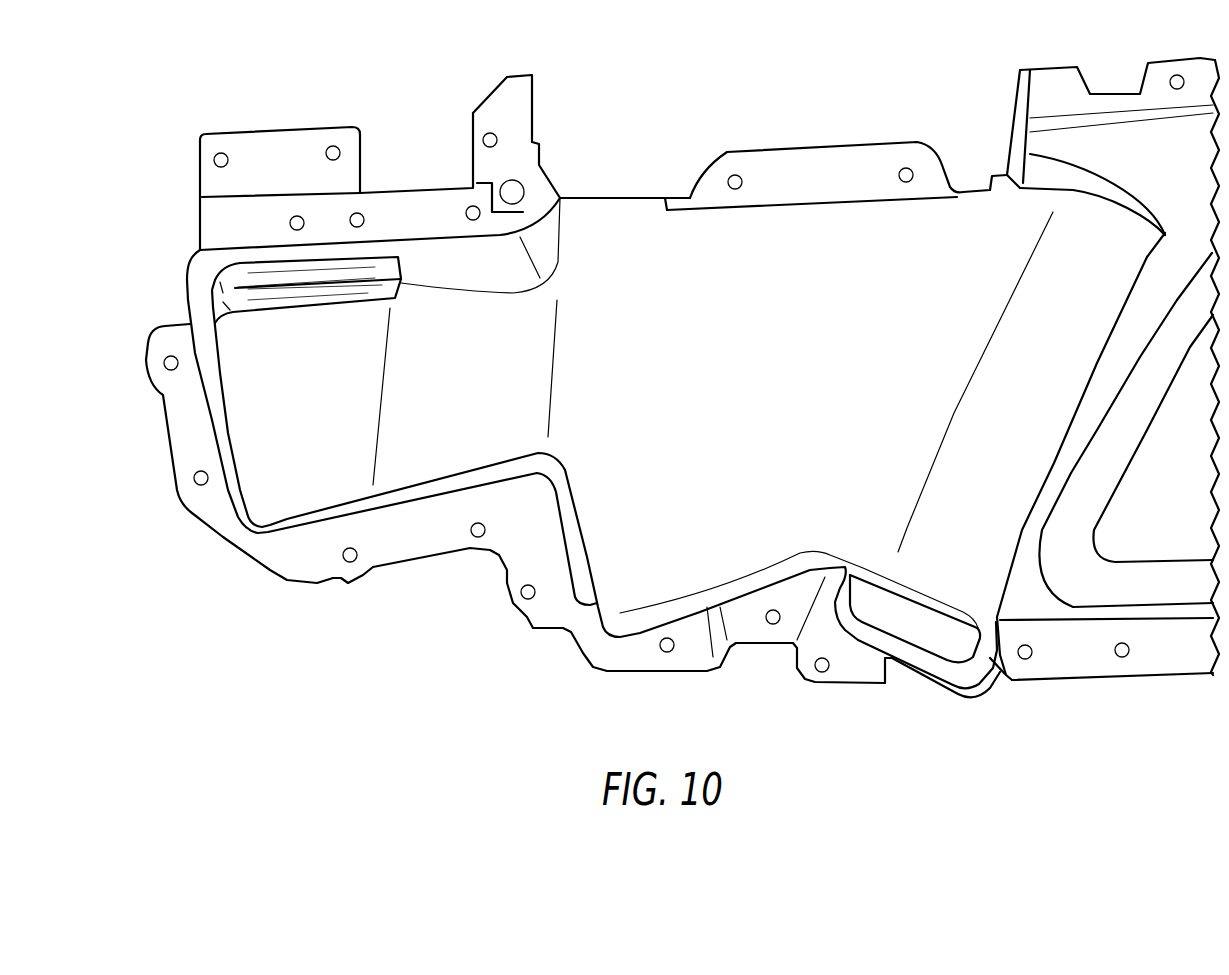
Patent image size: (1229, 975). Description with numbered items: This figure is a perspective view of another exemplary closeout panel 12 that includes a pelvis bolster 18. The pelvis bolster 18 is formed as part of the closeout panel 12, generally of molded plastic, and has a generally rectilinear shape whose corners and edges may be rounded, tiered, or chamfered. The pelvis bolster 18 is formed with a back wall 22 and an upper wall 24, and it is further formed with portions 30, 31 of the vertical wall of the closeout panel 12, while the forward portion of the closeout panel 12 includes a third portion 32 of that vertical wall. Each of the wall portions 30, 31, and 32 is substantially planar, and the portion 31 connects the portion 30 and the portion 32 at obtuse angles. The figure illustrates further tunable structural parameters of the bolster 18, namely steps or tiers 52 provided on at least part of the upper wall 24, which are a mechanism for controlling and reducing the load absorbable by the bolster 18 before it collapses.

The closeout panel 12 is at (845, 402).
The pelvis bolster 18 is at (241, 529).
The back wall 22 is at (226, 393).
The upper wall 24 is at (200, 250).
The portion of vertical wall 30 is at (314, 400).
The portion of vertical wall 31 is at (474, 388).
The third portion of vertical wall 32 is at (727, 280).
The steps or tiers 52 is at (332, 290).